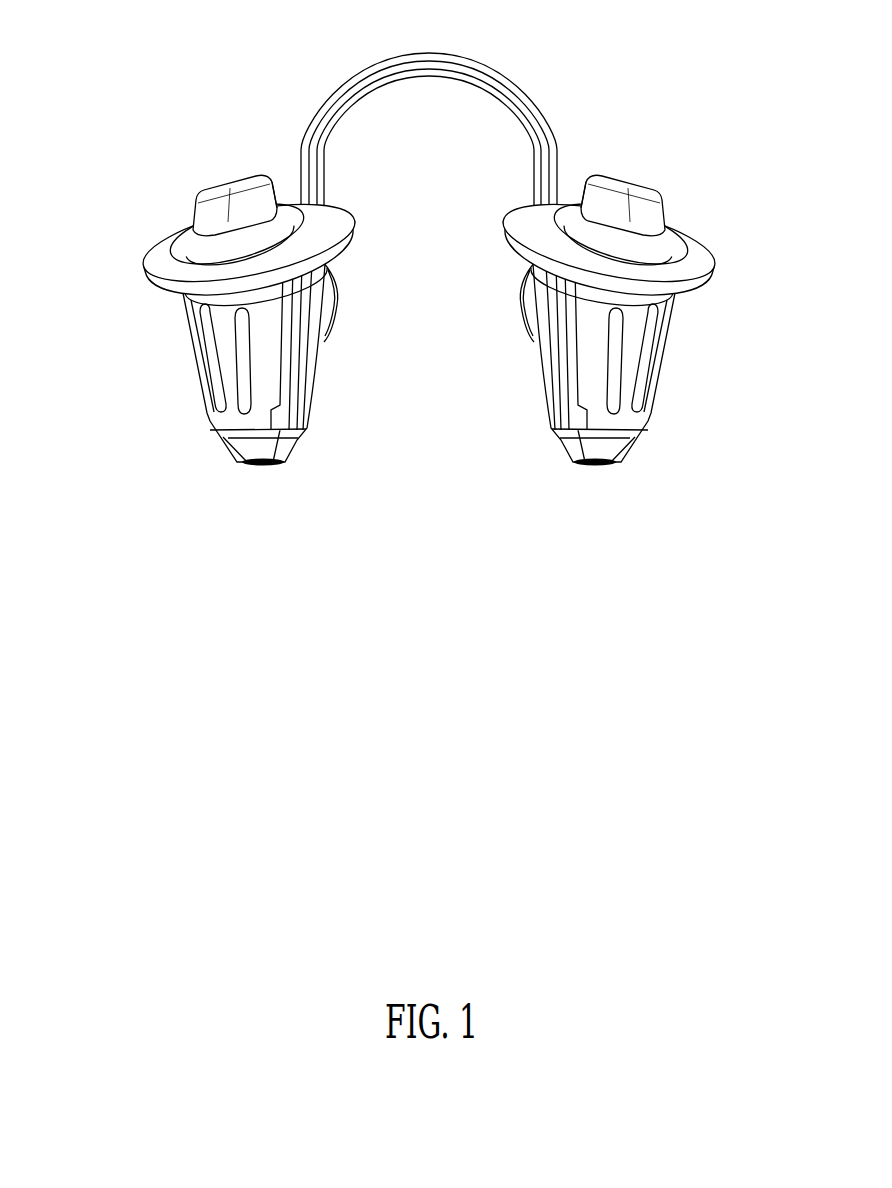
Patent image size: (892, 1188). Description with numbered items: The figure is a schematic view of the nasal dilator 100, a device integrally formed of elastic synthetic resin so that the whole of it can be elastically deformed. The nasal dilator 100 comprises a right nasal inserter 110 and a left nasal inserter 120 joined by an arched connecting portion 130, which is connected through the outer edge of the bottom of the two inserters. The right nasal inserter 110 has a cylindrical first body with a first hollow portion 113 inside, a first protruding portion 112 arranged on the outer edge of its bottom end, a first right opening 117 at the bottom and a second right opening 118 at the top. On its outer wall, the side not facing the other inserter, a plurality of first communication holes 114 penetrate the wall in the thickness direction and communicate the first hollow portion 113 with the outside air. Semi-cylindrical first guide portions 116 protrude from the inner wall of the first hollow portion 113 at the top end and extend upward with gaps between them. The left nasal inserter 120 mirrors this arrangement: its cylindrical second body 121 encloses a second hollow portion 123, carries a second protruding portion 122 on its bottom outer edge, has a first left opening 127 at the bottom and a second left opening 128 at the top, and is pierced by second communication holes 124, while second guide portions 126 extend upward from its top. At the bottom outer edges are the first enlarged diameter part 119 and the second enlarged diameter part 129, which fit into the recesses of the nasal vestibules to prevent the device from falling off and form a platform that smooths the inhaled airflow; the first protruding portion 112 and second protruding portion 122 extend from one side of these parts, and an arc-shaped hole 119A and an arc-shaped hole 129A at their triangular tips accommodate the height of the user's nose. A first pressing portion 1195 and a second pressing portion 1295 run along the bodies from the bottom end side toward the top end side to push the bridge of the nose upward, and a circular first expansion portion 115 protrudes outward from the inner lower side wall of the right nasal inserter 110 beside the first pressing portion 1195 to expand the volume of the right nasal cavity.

The nasal dilator 100 is at (604, 78).
The right nasal inserter 110 is at (648, 470).
The first protruding portion 112 is at (620, 190).
The first hollow portion 113 is at (645, 188).
The first communication holes 114 is at (614, 374).
The first expansion portion 115 is at (530, 308).
The first guide portions 116 is at (584, 450).
The first right opening 117 is at (581, 212).
The second right opening 118 is at (598, 466).
The first enlarged diameter part 119 is at (700, 280).
The arc-shaped hole 119A is at (675, 241).
The first pressing portion 1195 is at (556, 401).
The left nasal inserter 120 is at (208, 468).
The second body 121 is at (213, 423).
The second protruding portion 122 is at (238, 195).
The second hollow portion 123 is at (213, 188).
The second communication holes 124 is at (240, 357).
The second guide portions 126 is at (270, 450).
The first left opening 127 is at (277, 212).
The second left opening 128 is at (252, 468).
The second enlarged diameter part 129 is at (160, 280).
The arc-shaped hole 129A is at (183, 241).
The second pressing portion 1295 is at (310, 405).
The connecting portion 130 is at (429, 53).